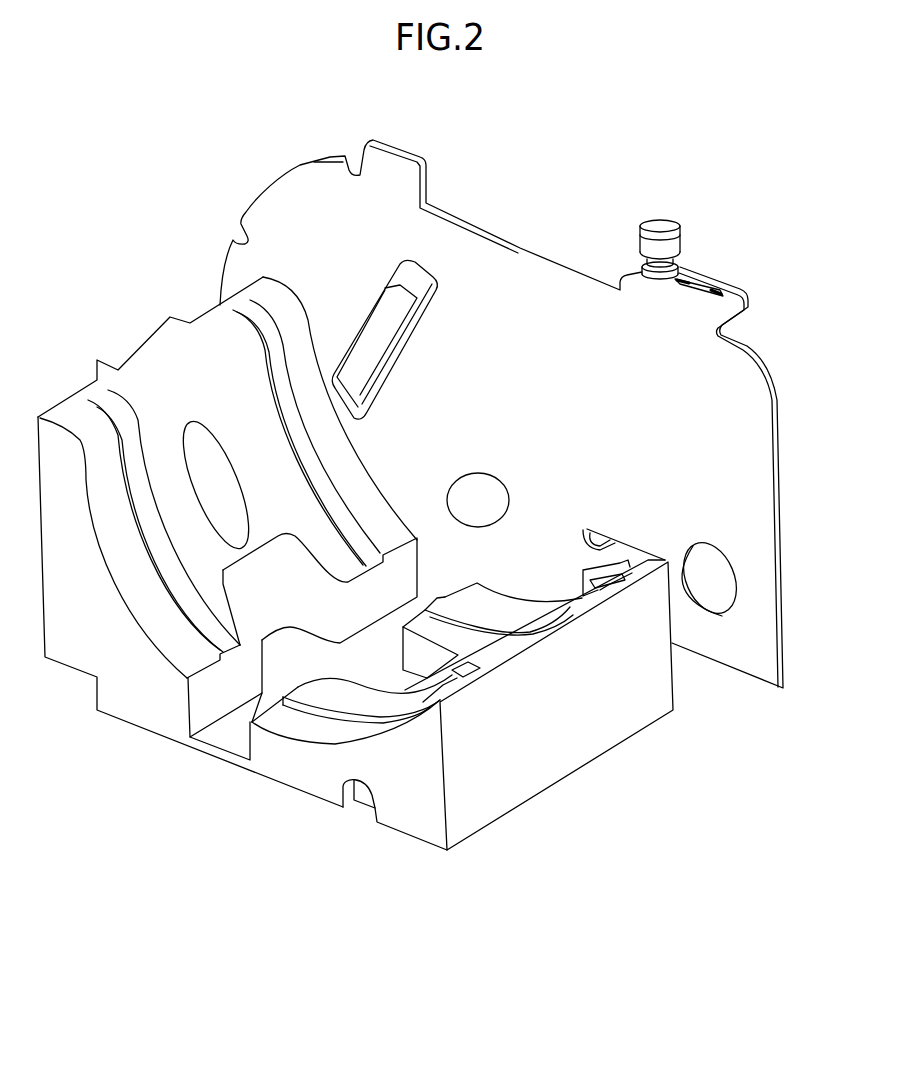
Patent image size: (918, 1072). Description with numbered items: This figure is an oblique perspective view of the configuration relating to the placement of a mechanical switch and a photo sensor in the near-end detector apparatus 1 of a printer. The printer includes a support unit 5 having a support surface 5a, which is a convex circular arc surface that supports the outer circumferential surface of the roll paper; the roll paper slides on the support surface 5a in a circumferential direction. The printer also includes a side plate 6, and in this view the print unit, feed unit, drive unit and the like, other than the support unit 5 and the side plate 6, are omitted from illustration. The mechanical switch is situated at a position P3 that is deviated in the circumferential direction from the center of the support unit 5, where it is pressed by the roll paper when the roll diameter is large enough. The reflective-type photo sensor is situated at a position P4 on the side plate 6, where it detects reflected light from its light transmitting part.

The near-end detector apparatus 1 is at (355, 587).
The support unit 5 is at (227, 557).
The support surface 5a is at (167, 620).
The side plate 6 is at (532, 414).
The position of the mechanical switch P3 is at (243, 547).
The position of the photo sensor P4 is at (510, 493).